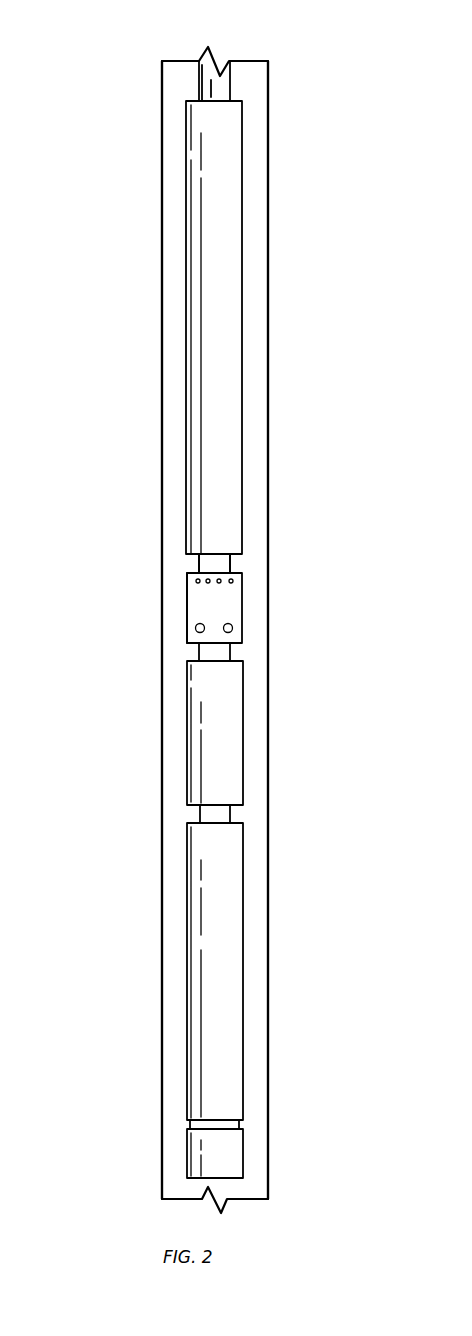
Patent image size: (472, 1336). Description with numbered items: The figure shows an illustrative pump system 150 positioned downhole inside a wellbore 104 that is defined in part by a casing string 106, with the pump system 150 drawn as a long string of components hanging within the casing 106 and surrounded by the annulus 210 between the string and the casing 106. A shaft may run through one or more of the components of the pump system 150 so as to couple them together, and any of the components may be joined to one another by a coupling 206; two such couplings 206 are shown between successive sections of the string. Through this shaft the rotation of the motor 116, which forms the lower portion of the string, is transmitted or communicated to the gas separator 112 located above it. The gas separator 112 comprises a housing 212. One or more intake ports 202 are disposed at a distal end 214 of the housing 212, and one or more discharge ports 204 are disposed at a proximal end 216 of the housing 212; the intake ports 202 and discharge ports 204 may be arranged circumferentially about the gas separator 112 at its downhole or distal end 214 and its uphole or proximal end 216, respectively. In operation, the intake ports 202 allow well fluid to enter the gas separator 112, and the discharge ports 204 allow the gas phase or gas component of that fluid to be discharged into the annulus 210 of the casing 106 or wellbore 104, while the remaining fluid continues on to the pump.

The pump system 150 is at (155, 25).
The wellbore 104 is at (268, 238).
The casing string 106 is at (269, 309).
The annulus 210 is at (252, 128).
The housing 212 is at (243, 612).
The discharge ports 204 is at (196, 582).
The gas separator 112 is at (233, 588).
The intake ports 202 is at (196, 628).
The distal end 214 is at (187, 643).
The proximal end 216 is at (233, 573).
The coupling 206 is at (232, 654).
The motor 116 is at (227, 913).